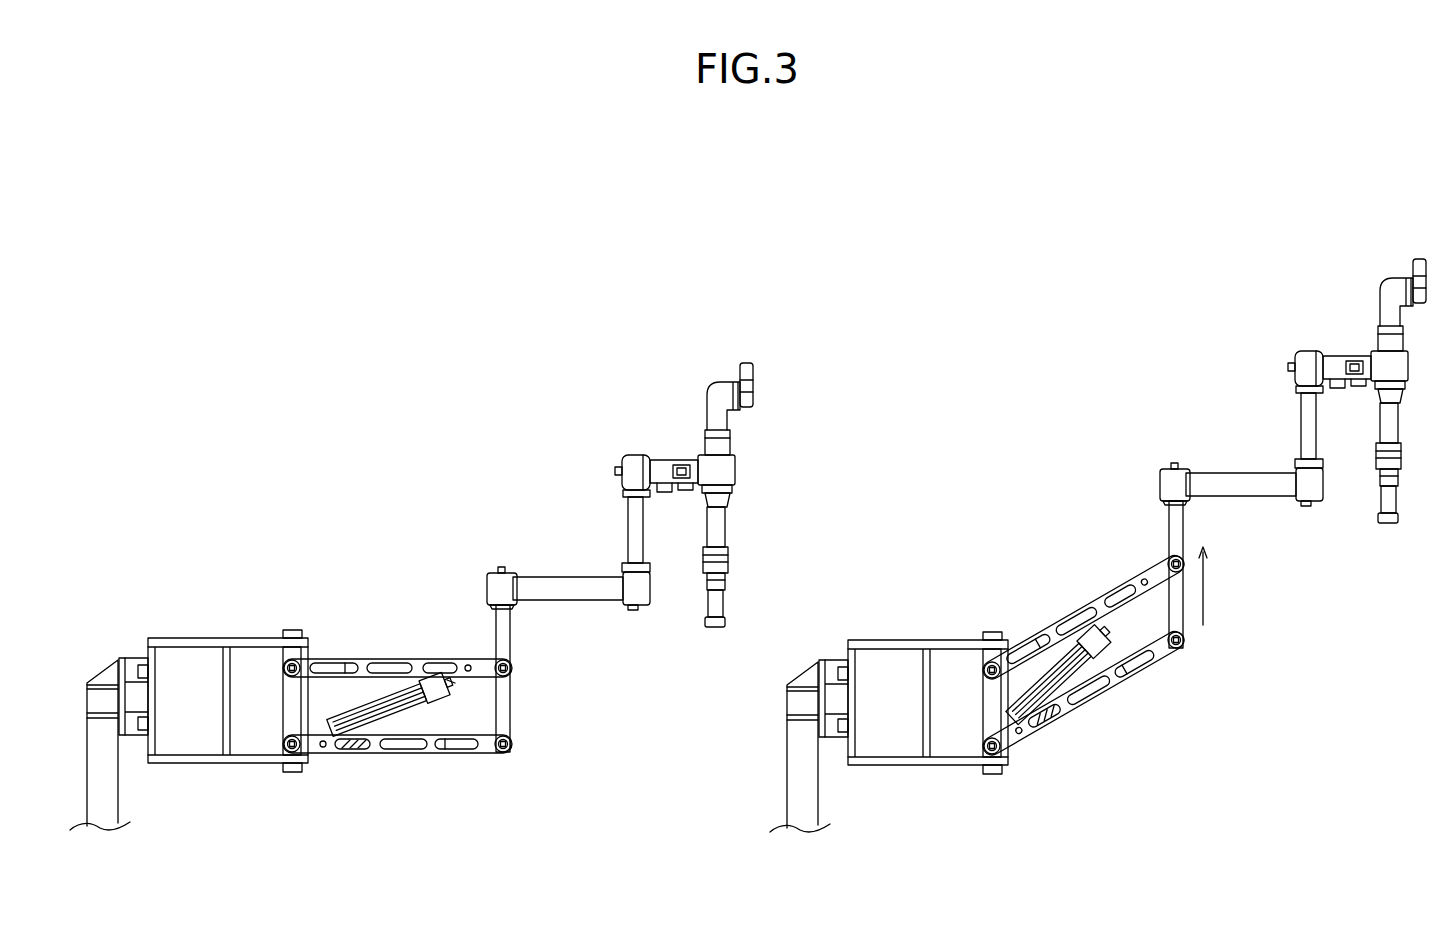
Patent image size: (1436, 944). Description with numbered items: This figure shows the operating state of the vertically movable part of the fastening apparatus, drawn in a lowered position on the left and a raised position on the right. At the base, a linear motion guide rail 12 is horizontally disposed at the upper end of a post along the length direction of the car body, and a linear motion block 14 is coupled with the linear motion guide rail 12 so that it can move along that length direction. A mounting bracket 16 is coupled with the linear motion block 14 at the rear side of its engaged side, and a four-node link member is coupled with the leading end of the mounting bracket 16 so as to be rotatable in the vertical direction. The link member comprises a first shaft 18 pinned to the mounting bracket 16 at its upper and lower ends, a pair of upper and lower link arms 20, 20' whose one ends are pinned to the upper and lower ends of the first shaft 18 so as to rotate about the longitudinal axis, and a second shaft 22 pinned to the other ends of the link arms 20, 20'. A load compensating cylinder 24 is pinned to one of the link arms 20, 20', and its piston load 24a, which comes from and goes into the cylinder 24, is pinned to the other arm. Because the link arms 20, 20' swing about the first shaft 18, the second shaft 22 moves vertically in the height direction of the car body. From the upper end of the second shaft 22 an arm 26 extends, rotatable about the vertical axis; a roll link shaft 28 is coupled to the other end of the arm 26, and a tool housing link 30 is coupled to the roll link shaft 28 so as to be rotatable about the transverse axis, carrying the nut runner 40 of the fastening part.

The linear motion guide rail 12 is at (145, 726).
The linear motion block 14 is at (150, 670).
The mounting bracket 16 is at (192, 640).
The first shaft 18 is at (283, 707).
The upper link arm 20 is at (397, 632).
The lower link arm 20' is at (397, 780).
The second shaft 22 is at (512, 705).
The cylinder 24 is at (403, 720).
The piston load 24a is at (455, 682).
The arm 26 is at (553, 577).
The roll link shaft 28 is at (634, 530).
The tool housing link 30 is at (665, 462).
The nut runner 40 is at (722, 531).